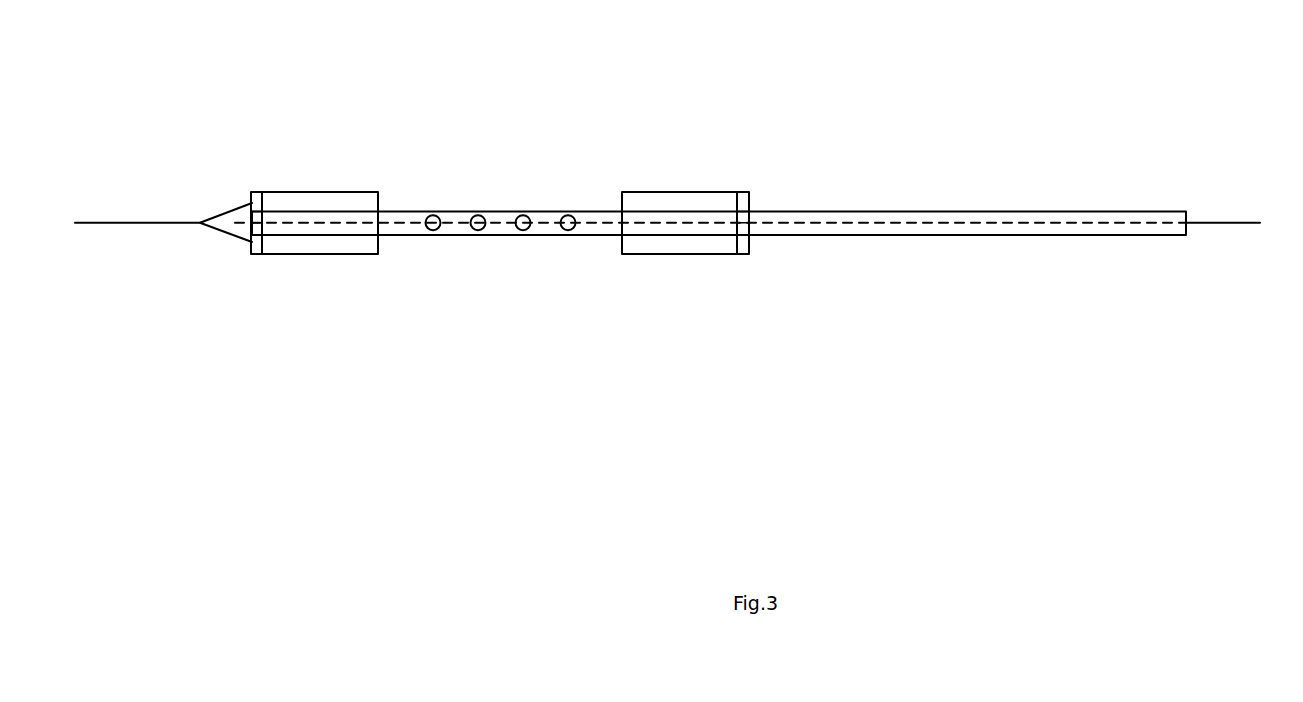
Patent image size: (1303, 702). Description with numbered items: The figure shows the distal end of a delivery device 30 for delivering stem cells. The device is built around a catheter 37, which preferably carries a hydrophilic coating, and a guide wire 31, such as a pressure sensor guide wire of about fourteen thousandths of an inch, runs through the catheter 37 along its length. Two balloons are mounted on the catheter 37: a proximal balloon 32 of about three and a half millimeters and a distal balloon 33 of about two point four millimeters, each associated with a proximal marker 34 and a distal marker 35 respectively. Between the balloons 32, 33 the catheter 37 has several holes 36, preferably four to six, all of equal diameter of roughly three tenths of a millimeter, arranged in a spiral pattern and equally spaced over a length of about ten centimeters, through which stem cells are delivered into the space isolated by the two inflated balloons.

The delivery device 30 is at (1130, 84).
The guide wire 31 is at (1212, 224).
The proximal balloon 32 is at (708, 254).
The distal balloon 33 is at (326, 254).
The proximal marker 34 is at (749, 192).
The distal marker 35 is at (252, 192).
The holes 36 is at (477, 212).
The catheter 37 is at (543, 188).